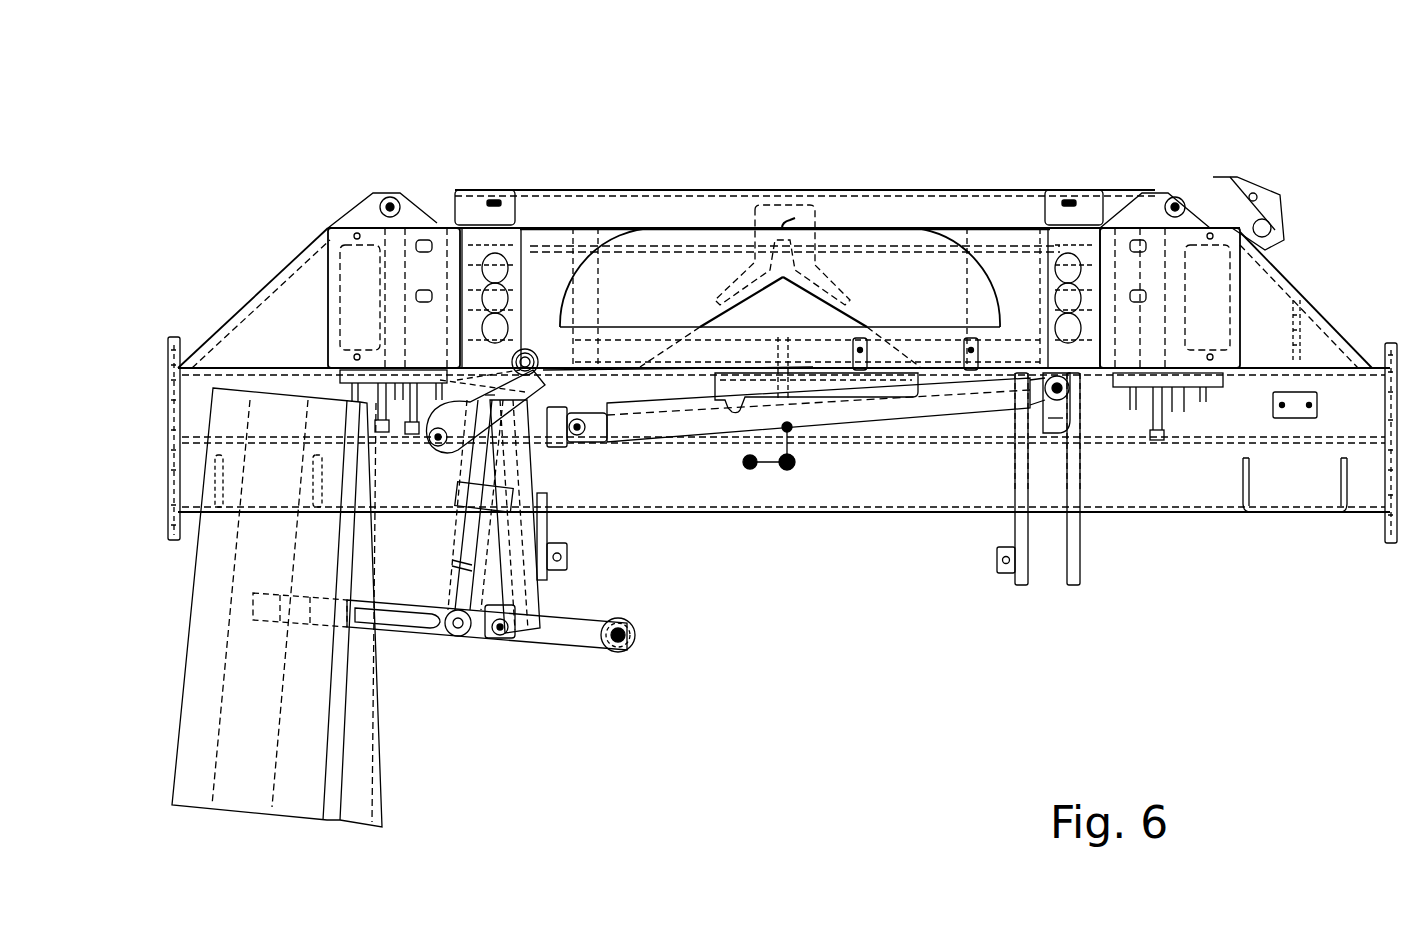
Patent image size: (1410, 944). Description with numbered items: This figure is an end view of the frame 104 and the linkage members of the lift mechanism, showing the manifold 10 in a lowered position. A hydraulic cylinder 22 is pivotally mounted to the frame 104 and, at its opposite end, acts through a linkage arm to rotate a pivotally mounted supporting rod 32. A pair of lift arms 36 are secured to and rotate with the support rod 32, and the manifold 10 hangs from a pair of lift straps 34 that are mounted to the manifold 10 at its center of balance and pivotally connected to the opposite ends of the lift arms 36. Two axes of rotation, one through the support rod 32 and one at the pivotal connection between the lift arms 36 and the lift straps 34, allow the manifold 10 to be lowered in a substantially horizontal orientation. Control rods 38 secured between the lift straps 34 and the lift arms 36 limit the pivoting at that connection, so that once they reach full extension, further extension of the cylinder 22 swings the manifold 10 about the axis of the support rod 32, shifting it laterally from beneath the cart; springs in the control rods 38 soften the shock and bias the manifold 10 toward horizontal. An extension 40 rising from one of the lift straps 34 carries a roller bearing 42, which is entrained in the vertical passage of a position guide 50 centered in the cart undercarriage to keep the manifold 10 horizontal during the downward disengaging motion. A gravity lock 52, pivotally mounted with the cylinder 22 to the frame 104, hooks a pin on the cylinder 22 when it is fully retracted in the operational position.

The manifold 10 is at (205, 620).
The hydraulic cylinder 22 is at (677, 427).
The supporting rod 32 is at (493, 323).
The lift straps 34 is at (477, 627).
The lift arms 36 is at (507, 577).
The control rods 38 is at (463, 543).
The extension 40 is at (557, 633).
The roller bearing 42 is at (622, 645).
The position guide 50 is at (820, 278).
The gravity lock 52 is at (747, 382).
The frame 104 is at (1167, 495).